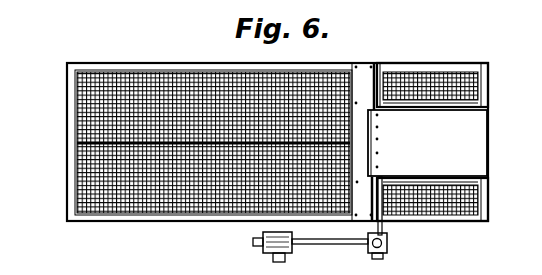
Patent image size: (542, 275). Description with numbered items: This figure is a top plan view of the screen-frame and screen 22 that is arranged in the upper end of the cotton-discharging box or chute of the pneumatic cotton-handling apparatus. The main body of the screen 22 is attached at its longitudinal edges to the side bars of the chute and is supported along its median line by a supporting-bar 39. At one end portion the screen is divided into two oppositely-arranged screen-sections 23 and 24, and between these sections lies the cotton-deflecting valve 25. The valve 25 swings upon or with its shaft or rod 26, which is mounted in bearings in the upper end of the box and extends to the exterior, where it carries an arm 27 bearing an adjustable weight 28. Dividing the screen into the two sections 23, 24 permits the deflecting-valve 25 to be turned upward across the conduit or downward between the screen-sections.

The screen 22 is at (277, 130).
The supporting-bar 39 is at (77, 143).
The screen-section 23 is at (486, 82).
The screen-section 24 is at (484, 194).
The cotton-deflecting valve 25 is at (427, 143).
The shaft or rod 26 is at (390, 208).
The arm 27 is at (341, 243).
The adjustable weight 28 is at (263, 243).